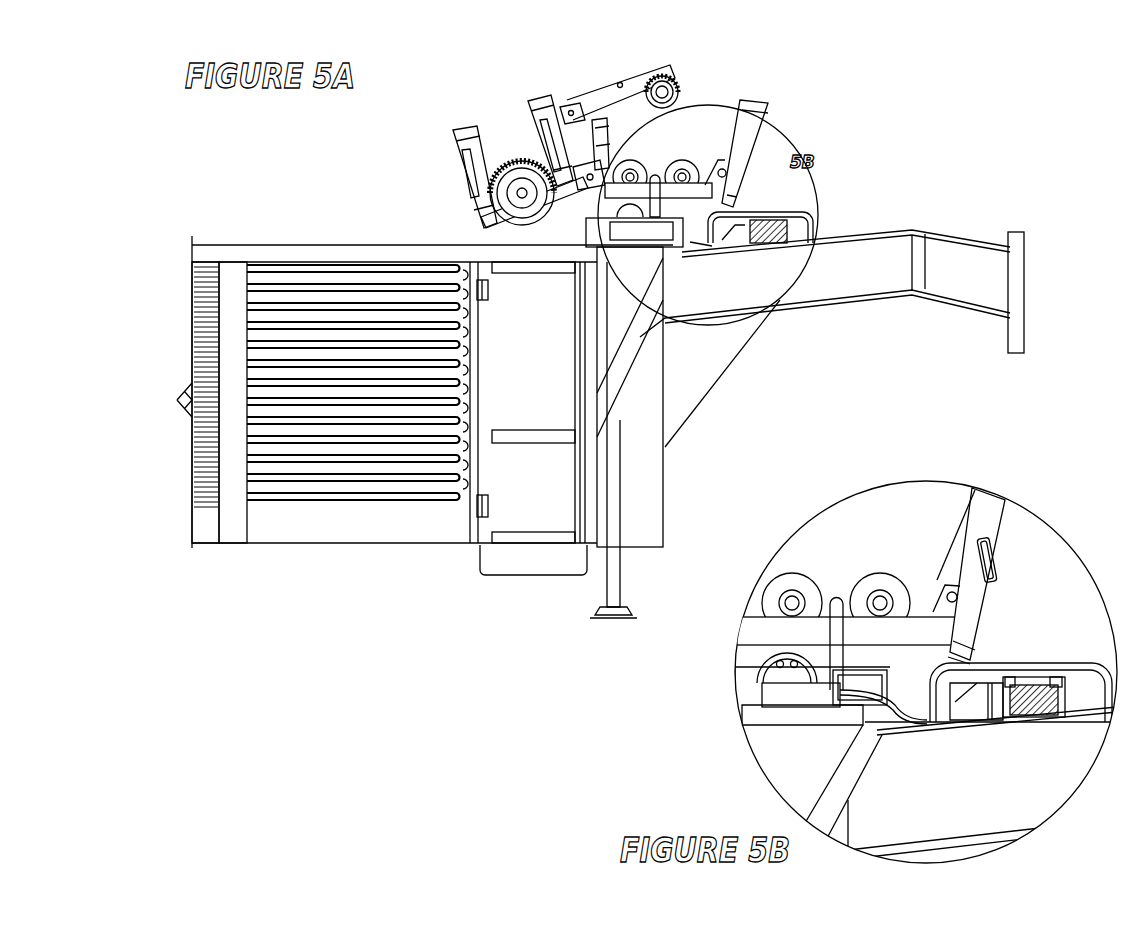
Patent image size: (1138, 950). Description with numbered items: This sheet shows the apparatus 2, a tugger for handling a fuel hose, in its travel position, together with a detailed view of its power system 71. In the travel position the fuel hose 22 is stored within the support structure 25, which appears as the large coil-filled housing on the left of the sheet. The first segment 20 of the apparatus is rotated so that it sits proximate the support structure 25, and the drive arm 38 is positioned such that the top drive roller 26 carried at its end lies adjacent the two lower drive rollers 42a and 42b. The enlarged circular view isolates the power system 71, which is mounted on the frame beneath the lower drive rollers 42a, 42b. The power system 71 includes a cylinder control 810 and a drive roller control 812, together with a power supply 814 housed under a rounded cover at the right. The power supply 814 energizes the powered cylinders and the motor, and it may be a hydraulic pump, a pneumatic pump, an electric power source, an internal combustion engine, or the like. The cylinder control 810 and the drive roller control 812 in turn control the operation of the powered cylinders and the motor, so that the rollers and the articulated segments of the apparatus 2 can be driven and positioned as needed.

In FIG. 5A, the apparatus 2 is at (412, 97).
In FIG. 5A, the first segment 20 is at (540, 82).
In FIG. 5A, the fuel hose 22 is at (395, 264).
In FIG. 5A, the support structure 25 is at (278, 246).
In FIG. 5A, the top drive roller 26 is at (687, 100).
In FIG. 5A, the drive arm 38 is at (626, 88).
In FIG. 5A, the lower drive roller 42a is at (640, 165).
In FIG. 5B, the lower drive roller 42a is at (792, 603).
In FIG. 5A, the lower drive roller 42b is at (690, 166).
In FIG. 5B, the lower drive roller 42b is at (880, 603).
In FIG. 5B, the power system 71 is at (762, 656).
In FIG. 5B, the cylinder control 810 is at (778, 648).
In FIG. 5B, the drive roller control 812 is at (790, 652).
In FIG. 5B, the power supply 814 is at (1082, 668).